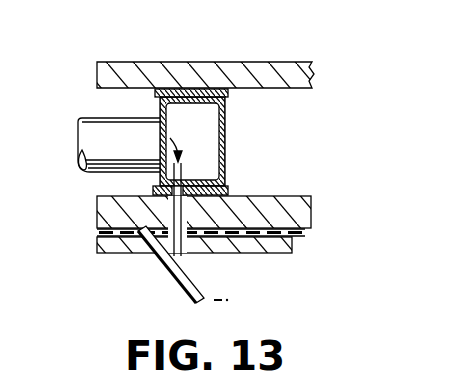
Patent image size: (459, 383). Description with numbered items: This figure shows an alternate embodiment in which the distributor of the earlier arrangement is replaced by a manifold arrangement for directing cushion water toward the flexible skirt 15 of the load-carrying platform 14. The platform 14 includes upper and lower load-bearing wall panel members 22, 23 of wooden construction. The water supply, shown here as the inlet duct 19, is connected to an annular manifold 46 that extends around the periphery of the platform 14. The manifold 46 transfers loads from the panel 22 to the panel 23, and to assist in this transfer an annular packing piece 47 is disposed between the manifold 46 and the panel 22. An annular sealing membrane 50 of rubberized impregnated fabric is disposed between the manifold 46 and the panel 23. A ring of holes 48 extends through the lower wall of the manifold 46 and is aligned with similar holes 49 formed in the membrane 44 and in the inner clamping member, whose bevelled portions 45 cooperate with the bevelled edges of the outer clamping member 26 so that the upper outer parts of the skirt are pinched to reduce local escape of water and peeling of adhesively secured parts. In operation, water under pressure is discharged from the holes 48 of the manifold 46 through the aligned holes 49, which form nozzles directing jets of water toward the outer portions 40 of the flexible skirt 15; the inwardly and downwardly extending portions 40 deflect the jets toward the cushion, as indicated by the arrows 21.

The load-carrying platform 14 is at (204, 54).
The upper load-bearing wall panel member 22 is at (258, 72).
The annular packing piece 47 is at (156, 92).
The annular manifold 46 is at (225, 118).
The inlet duct 19 is at (120, 170).
The holes 48 is at (184, 182).
The annular sealing membrane 50 is at (233, 195).
The lower load-bearing wall panel member 23 is at (297, 196).
The holes 49 is at (168, 207).
The outer clamping member 26 is at (96, 238).
The membrane 44 is at (298, 236).
The portions of the inner clamping member 45 is at (242, 242).
The flexible skirt 15 is at (160, 278).
The arrows 21 is at (190, 259).
The outer portions of the flexible skirt 40 is at (183, 288).